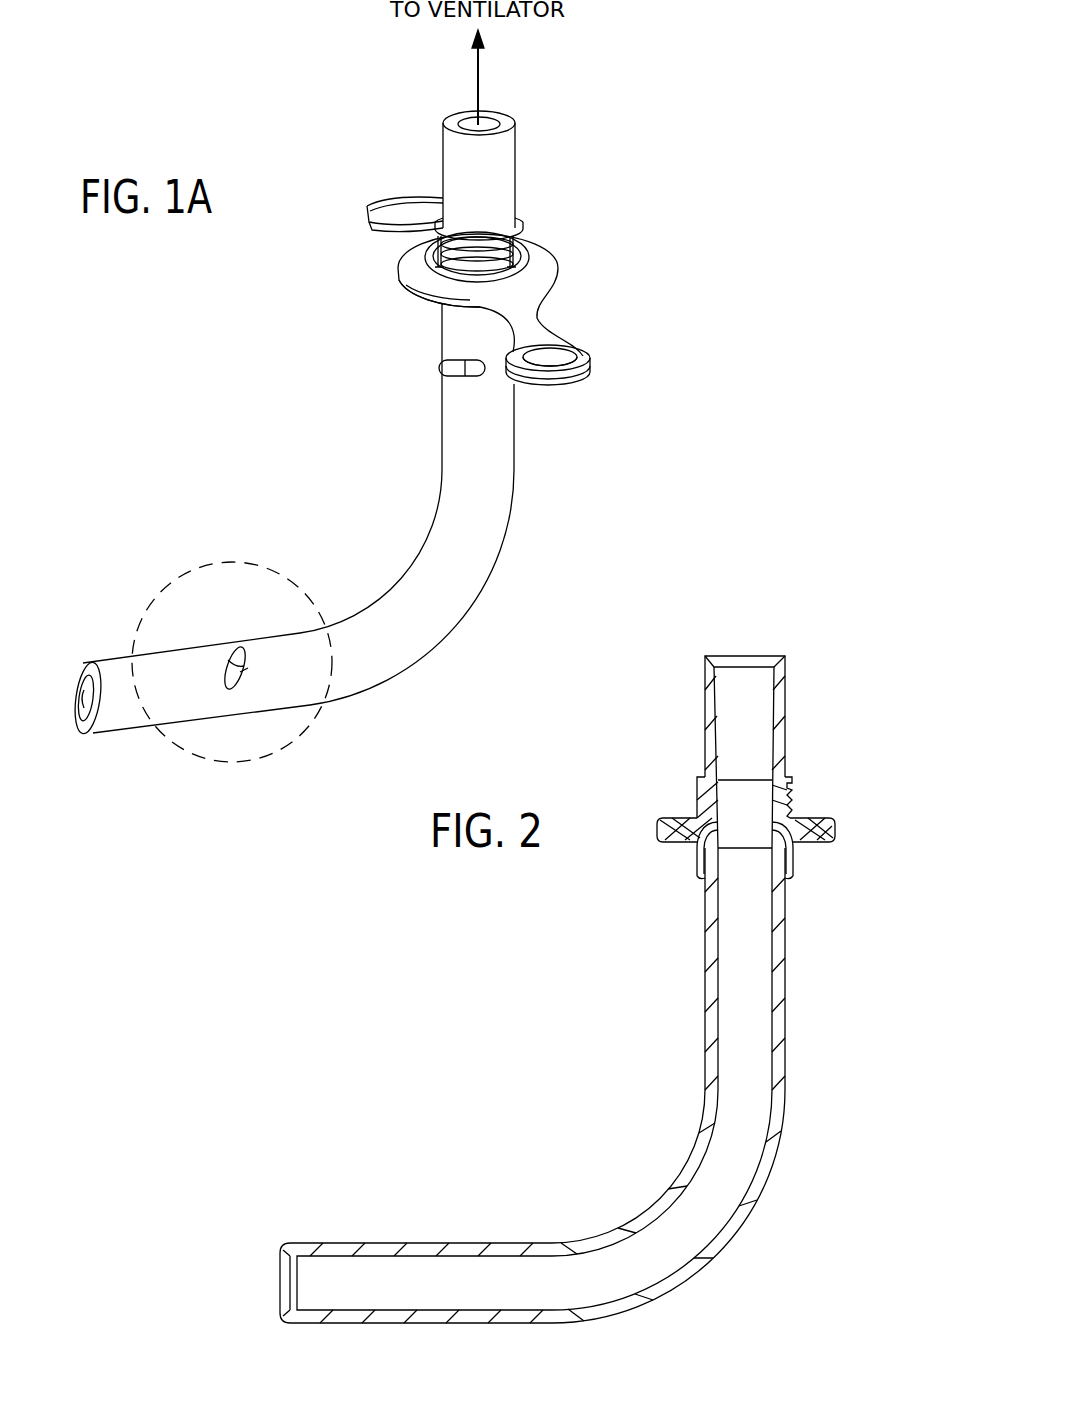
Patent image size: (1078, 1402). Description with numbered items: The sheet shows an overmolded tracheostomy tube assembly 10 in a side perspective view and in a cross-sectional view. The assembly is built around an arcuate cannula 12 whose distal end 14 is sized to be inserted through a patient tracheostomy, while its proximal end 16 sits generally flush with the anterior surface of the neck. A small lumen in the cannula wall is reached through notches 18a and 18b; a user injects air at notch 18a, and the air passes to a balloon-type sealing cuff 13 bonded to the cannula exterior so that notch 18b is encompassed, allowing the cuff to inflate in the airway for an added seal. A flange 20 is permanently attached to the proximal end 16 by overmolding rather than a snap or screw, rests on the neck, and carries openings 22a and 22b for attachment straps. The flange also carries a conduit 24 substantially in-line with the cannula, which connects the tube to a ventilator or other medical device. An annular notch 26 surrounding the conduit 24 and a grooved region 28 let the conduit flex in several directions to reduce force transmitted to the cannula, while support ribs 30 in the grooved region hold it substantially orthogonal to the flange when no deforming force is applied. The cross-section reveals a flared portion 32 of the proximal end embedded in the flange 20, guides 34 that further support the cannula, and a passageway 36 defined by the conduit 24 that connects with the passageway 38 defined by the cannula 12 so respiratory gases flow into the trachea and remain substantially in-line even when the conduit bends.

In FIG. 1A, the tracheostomy tube assembly 10 is at (283, 175).
In FIG. 2, the tracheostomy tube assembly 10 is at (606, 703).
In FIG. 1A, the cannula 12 is at (398, 590).
In FIG. 1A, the sealing cuff 13 is at (205, 562).
In FIG. 1A, the distal end 14 is at (88, 664).
In FIG. 1A, the proximal end 16 is at (433, 305).
In FIG. 1A, the notch 18a is at (245, 648).
In FIG. 1A, the notch 18b is at (449, 369).
In FIG. 1A, the flange 20 is at (410, 292).
In FIG. 1A, the opening 22a is at (555, 356).
In FIG. 1A, the opening 22b is at (400, 206).
In FIG. 1A, the conduit 24 is at (518, 176).
In FIG. 1A, the annular notch 26 is at (530, 256).
In FIG. 2, the annular notch 26 is at (657, 830).
In FIG. 1A, the grooved region 28 is at (475, 246).
In FIG. 2, the grooved region 28 is at (792, 806).
In FIG. 1A, the support ribs 30 is at (522, 246).
In FIG. 2, the support ribs 30 is at (705, 796).
In FIG. 2, the flared portion 32 is at (703, 838).
In FIG. 2, the guides 34 is at (700, 874).
In FIG. 2, the passageway 36 is at (740, 680).
In FIG. 2, the passageway 38 is at (705, 996).